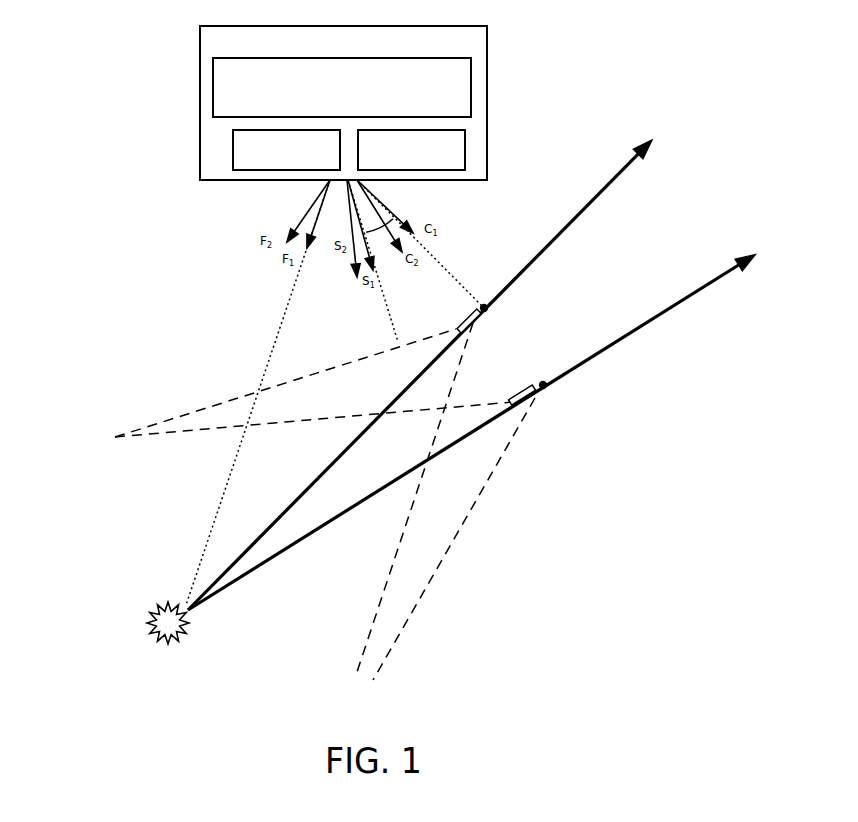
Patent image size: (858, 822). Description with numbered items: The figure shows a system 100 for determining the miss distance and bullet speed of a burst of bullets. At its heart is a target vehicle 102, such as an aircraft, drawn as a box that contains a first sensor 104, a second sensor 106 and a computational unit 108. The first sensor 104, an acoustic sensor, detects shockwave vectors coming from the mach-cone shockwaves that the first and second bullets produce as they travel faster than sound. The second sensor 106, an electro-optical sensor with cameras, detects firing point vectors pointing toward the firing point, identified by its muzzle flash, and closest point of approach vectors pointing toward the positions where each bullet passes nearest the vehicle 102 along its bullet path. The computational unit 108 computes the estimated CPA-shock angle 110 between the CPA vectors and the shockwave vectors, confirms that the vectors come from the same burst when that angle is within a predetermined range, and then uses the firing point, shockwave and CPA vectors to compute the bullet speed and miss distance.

The system 100 is at (510, 676).
The target vehicle 102 is at (390, 50).
The first sensor 104 is at (300, 166).
The second sensor 106 is at (425, 166).
The computational unit 108 is at (445, 101).
The CPA-shock angle 110 is at (218, 203).